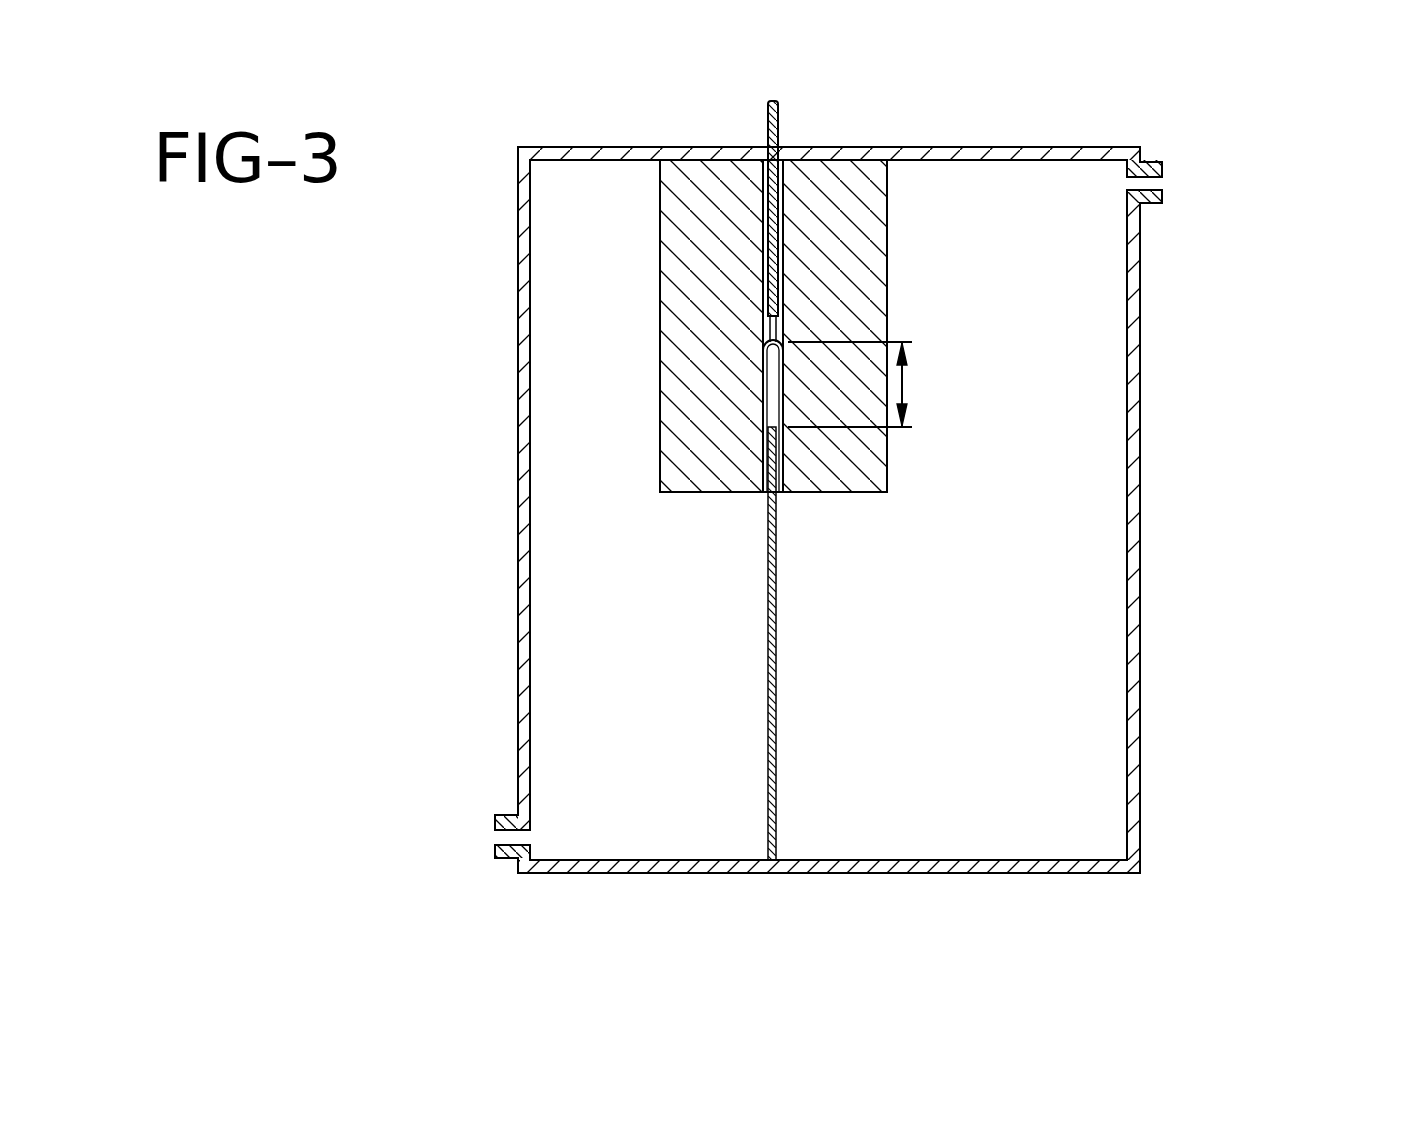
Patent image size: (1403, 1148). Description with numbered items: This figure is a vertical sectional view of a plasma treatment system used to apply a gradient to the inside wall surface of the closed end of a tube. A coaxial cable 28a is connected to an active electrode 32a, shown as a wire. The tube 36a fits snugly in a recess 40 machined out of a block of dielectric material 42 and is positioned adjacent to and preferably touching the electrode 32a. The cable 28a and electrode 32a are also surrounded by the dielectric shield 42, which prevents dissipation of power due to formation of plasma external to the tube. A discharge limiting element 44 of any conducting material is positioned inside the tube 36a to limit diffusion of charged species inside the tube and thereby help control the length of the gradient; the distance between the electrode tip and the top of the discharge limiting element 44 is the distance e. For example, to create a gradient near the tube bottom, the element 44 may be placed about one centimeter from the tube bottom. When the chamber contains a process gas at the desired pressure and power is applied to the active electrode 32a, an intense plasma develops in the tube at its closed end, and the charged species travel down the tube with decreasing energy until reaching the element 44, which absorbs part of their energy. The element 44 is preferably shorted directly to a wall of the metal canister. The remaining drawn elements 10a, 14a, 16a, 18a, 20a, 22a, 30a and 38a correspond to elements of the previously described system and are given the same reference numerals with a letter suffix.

The thermoresponsive switch assembly 10a is at (1175, 347).
The first shell half 14a is at (533, 795).
The top wall 16a is at (625, 150).
The bottom wall 18a is at (900, 875).
The upper opening 20a is at (1150, 184).
The lower opening 22a is at (495, 840).
The coaxial cable 28a is at (783, 285).
The right side wall 30a is at (1072, 535).
The active electrode 32a is at (777, 333).
The tube 36a is at (770, 345).
The inner rod 38a is at (790, 432).
The recess 40 is at (765, 493).
The block of dielectric material 42 is at (818, 492).
The discharge limiting element 44 is at (768, 578).
The distance e is at (910, 386).